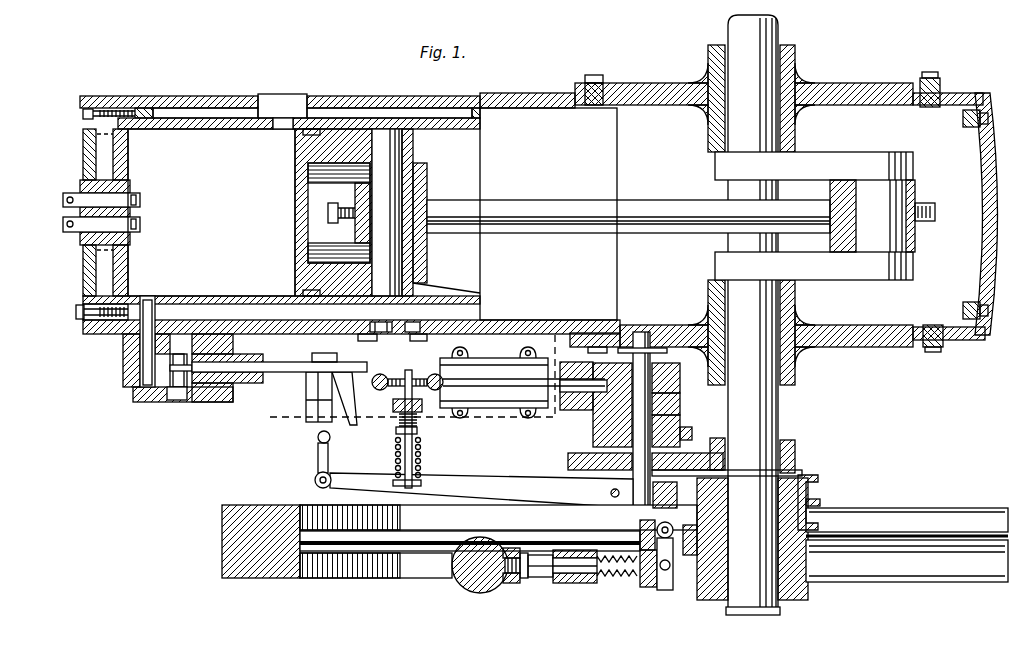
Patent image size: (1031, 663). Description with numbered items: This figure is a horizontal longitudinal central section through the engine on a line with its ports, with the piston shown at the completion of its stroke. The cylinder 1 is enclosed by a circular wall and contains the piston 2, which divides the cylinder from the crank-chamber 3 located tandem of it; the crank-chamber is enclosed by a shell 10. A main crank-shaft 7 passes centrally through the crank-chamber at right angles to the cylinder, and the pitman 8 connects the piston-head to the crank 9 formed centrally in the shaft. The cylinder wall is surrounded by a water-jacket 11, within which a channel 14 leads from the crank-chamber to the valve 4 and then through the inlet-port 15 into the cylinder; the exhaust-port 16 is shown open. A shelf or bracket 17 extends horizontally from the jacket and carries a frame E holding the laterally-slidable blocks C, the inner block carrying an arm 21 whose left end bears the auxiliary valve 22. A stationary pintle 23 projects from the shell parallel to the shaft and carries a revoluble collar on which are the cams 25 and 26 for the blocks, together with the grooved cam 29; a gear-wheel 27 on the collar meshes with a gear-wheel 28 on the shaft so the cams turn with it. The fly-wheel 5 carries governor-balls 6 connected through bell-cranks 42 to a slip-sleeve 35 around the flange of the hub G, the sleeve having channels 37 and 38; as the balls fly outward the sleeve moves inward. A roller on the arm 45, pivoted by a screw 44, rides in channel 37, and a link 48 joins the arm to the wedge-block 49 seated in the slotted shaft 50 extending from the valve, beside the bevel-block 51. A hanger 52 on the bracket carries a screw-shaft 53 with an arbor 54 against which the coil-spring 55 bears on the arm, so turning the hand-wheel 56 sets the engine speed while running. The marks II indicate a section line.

The cylinder 1 is at (211, 212).
The piston 2 is at (379, 212).
The crank-chamber 3 is at (548, 214).
The valve 4 is at (200, 392).
The fly-wheel 5 is at (459, 541).
The governor-balls 6 is at (554, 565).
The crank-shaft 7 is at (751, 315).
The pitman 8 is at (628, 216).
The crank 9 is at (825, 216).
The shell of the crank-chamber 10 is at (668, 89).
The water-jacket 11 is at (184, 102).
The channel 14 is at (281, 306).
The inlet-port 15 is at (143, 307).
The exhaust-port 16 is at (282, 129).
The bracket 17 is at (305, 398).
The arm 21 is at (678, 405).
The auxiliary valve 22 is at (162, 385).
The pintle 23 is at (643, 353).
The cam 25 is at (674, 376).
The cam 26 is at (672, 394).
The gear-wheel 27 is at (568, 462).
The gear-wheel 28 is at (796, 455).
The cam 29 is at (597, 430).
The slip-sleeve 35 is at (820, 503).
The channel 37 is at (813, 490).
The channel 38 is at (818, 517).
The bell-crank 42 is at (667, 590).
The screw 44 is at (610, 493).
The arm 45 is at (457, 488).
The link 48 is at (316, 452).
The wedge-block 49 is at (348, 414).
The shaft 50 is at (282, 360).
The bevel-block 51 is at (338, 358).
The hanger 52 is at (395, 405).
The screw-shaft 53 is at (411, 421).
The arbor 54 is at (417, 433).
The coil-spring 55 is at (397, 460).
The hand-wheel 56 is at (387, 380).
The frame E is at (494, 381).
The sliding blocks C is at (524, 385).
The hub G is at (807, 593).
The section line II is at (63, 200).